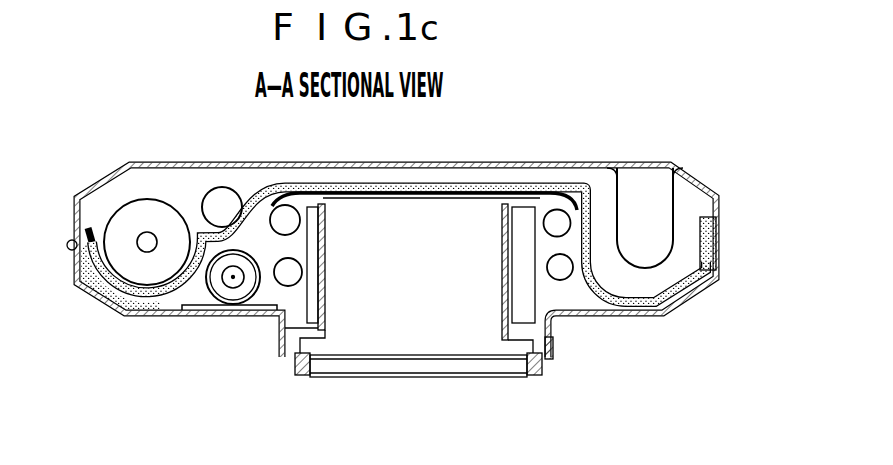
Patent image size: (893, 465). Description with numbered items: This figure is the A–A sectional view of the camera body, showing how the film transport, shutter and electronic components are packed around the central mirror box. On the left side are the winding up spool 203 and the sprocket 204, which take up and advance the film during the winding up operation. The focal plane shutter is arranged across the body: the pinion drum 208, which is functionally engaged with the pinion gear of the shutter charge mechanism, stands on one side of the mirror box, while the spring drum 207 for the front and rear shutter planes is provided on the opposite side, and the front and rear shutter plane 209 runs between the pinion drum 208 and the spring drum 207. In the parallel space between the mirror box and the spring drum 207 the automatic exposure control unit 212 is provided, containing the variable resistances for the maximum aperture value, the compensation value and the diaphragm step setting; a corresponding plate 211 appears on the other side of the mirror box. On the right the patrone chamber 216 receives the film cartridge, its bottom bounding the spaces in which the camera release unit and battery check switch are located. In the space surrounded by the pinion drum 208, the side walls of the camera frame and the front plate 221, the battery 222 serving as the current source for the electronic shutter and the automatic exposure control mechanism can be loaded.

The winding up spool 203 is at (150, 212).
The sprocket 204 is at (223, 205).
The spring drum 207 is at (562, 270).
The pinion drum 208 is at (291, 270).
The front and rear shutter plane 209 is at (384, 192).
The side plate 211 is at (318, 306).
The automatic exposure control unit 212 is at (521, 305).
The patrone chamber 216 is at (643, 232).
The front plate 221 is at (267, 309).
The battery 222 is at (222, 288).